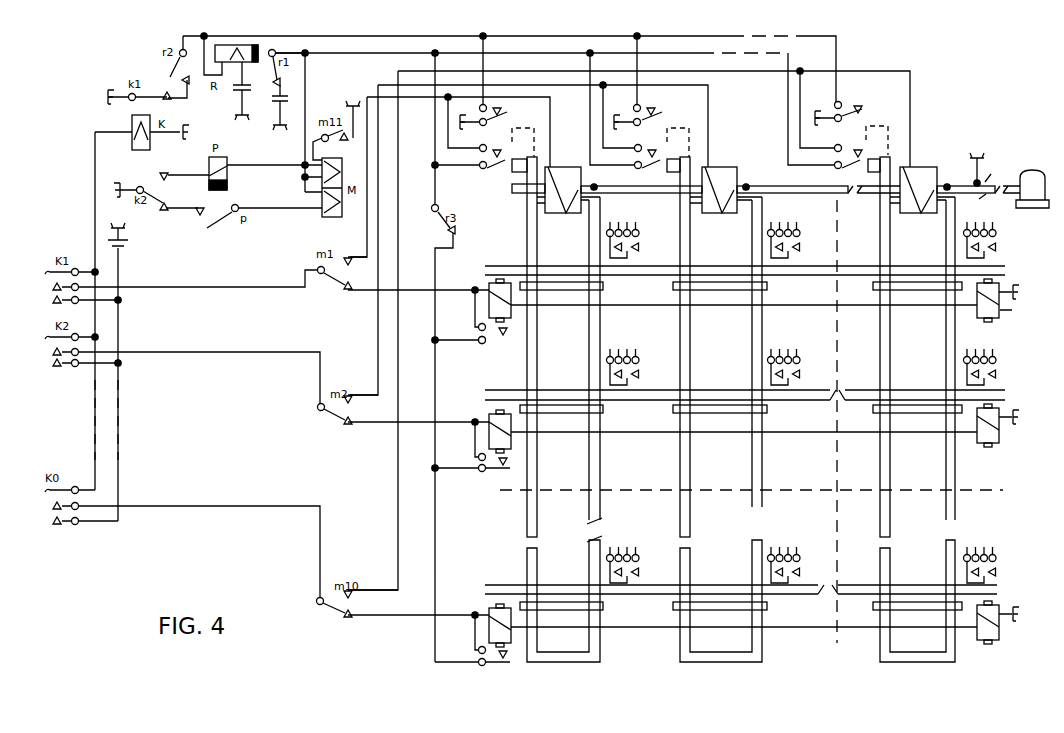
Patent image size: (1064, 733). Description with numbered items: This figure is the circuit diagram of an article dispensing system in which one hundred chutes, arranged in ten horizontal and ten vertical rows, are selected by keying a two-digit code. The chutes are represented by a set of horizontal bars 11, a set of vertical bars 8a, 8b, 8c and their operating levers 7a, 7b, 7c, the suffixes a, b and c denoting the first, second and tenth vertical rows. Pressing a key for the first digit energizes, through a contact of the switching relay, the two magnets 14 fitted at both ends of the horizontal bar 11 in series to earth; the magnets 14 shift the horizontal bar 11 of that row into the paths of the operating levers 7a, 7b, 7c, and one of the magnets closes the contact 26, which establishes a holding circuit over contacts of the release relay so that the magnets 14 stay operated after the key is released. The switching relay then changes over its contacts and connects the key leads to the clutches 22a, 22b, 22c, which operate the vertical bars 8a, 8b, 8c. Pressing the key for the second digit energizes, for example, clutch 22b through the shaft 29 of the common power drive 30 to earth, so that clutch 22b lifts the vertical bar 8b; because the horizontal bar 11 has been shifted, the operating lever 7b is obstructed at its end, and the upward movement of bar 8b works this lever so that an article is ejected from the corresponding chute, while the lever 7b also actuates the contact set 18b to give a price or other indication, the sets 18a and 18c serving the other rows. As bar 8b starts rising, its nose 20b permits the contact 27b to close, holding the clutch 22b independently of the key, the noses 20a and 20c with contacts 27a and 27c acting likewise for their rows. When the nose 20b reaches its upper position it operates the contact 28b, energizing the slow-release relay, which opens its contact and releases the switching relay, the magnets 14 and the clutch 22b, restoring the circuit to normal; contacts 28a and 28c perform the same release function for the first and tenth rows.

The operating lever 7a is at (603, 286).
The operating lever 7b is at (767, 286).
The operating lever 7c is at (873, 284).
The vertical bar 8a is at (596, 207).
The vertical bar 8b is at (762, 207).
The vertical bar 8c is at (955, 216).
The horizontal bar 11 is at (507, 272).
The magnet 14 is at (488, 289).
The contact set 18a is at (628, 250).
The contact set 18b is at (792, 250).
The contact set 18c is at (987, 250).
The nose 20a is at (511, 160).
The nose 20b is at (669, 160).
The nose 20c is at (868, 158).
The clutch 22a is at (565, 178).
The clutch 22b is at (718, 178).
The clutch 22c is at (919, 178).
The contact 26 is at (502, 336).
The contact 27a is at (470, 172).
The contact 27b is at (625, 118).
The contact 27c is at (846, 172).
The contact 28a is at (497, 96).
The contact 28b is at (660, 116).
The contact 28c is at (851, 129).
The shaft 29 is at (995, 176).
The common power drive 30 is at (1032, 170).